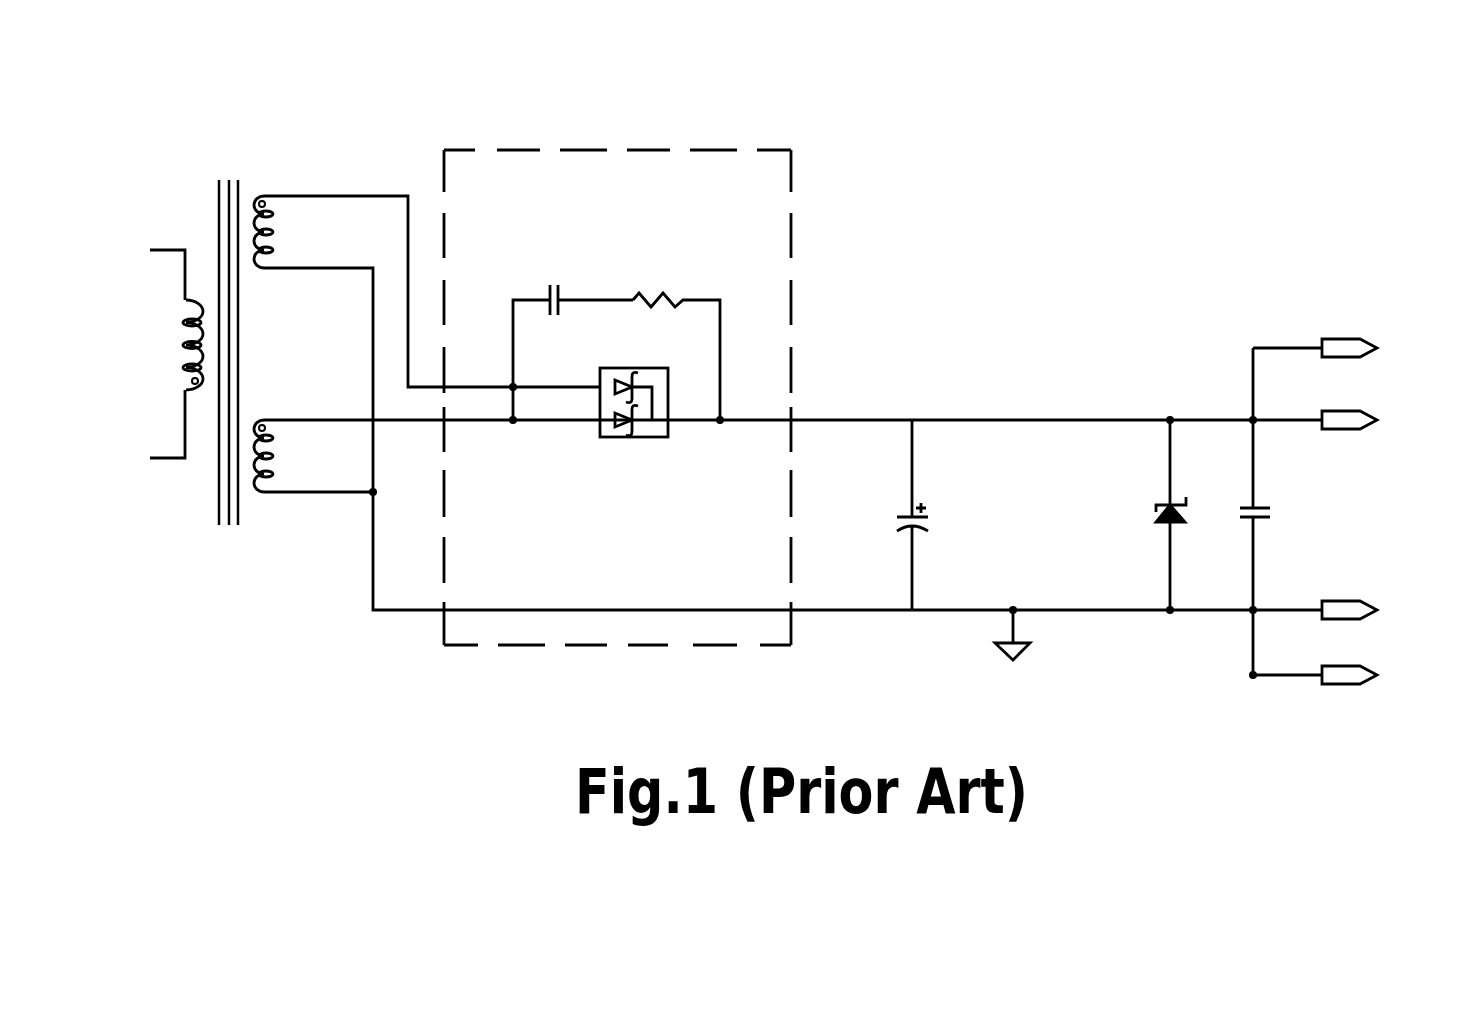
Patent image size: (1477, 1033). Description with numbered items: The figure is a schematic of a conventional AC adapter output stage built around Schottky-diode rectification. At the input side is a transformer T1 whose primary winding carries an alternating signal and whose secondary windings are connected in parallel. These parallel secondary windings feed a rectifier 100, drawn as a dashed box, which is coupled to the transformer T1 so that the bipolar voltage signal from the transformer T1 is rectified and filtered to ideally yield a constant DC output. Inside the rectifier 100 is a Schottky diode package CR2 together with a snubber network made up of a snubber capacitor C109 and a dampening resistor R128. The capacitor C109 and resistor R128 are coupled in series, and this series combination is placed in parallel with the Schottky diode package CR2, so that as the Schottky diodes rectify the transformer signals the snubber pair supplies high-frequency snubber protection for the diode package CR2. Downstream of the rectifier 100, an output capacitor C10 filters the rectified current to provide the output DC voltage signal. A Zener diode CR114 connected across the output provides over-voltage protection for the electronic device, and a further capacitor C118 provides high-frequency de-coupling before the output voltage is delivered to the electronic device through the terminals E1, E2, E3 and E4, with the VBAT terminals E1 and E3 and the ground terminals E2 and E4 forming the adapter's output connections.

The rectifier 100 is at (648, 646).
The transformer T1 is at (211, 328).
The snubber capacitor C109 is at (573, 307).
The dampening resistor R128 is at (678, 307).
The Schottky diode package CR2 is at (642, 436).
The output capacitor C10 is at (972, 515).
The Zener diode CR114 is at (1124, 515).
The capacitor C118 is at (1306, 511).
The terminal E1 is at (1358, 399).
The terminal E2 is at (1352, 657).
The terminal E3 is at (1358, 329).
The terminal E4 is at (1352, 590).